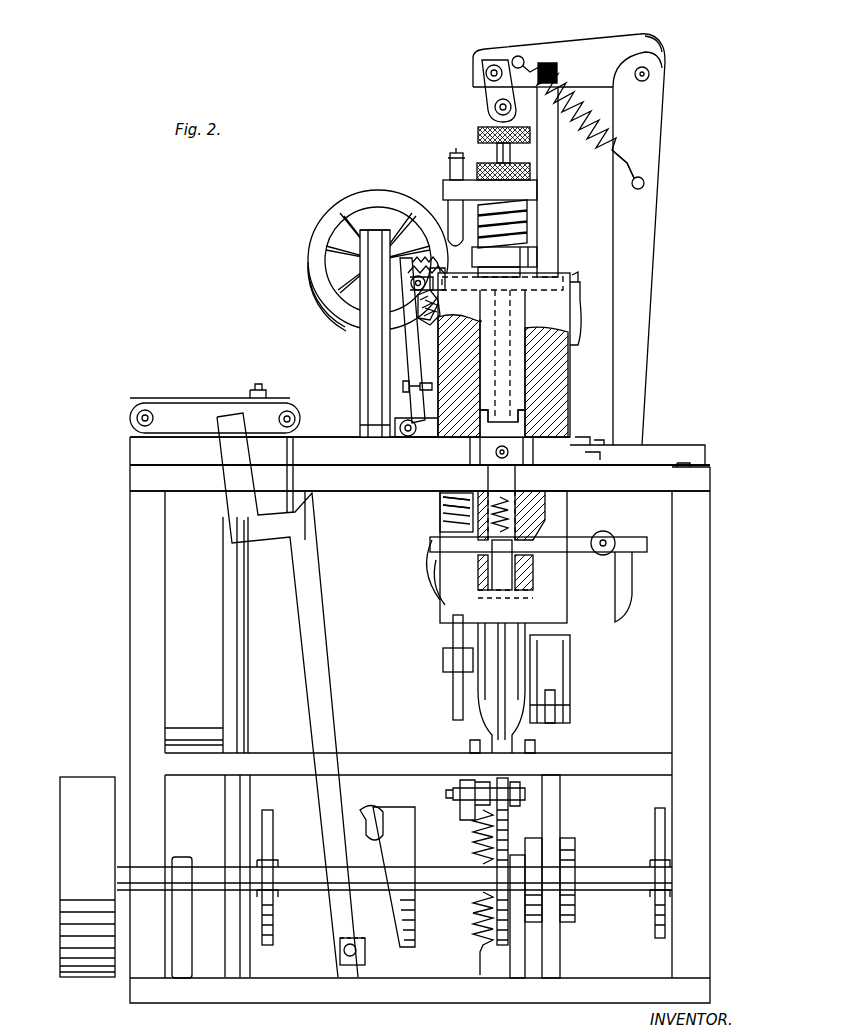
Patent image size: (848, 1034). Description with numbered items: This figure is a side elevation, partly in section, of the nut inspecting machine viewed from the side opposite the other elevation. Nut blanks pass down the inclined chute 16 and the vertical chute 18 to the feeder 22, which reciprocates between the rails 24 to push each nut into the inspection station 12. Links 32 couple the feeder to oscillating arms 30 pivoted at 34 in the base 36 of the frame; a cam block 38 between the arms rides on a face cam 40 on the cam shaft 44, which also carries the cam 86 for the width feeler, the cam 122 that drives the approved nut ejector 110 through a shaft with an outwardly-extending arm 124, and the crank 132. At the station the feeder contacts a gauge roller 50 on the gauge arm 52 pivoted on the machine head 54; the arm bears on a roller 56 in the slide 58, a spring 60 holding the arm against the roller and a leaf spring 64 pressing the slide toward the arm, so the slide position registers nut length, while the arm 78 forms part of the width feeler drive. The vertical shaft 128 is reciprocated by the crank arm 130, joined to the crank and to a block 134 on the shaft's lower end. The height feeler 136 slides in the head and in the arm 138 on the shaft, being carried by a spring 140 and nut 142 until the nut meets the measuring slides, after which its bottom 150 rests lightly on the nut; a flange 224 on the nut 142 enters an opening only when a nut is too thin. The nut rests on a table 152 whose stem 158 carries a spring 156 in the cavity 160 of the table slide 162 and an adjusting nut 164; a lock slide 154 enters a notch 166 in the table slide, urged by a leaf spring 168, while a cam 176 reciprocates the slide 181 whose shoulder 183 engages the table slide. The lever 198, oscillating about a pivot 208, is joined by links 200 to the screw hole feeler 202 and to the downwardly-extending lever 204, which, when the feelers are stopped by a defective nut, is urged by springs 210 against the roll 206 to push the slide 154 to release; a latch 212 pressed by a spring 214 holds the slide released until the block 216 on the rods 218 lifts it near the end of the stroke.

The inspection station 12 is at (510, 452).
The inclined chute 16 is at (372, 370).
The vertical chute 18 is at (364, 406).
The feeder 22 is at (322, 441).
The rails 24 is at (491, 460).
The oscillating arms 30 is at (318, 608).
The links 32 is at (190, 412).
The pivot 34 is at (340, 954).
The base 36 is at (384, 1000).
The cam block 38 is at (365, 812).
The face cam 40 is at (400, 818).
The cam shaft 44 is at (616, 890).
The gauge roller 50 is at (405, 438).
The gauge arm 52 is at (404, 345).
The machine head 54 is at (570, 408).
The roller 56 is at (427, 313).
The slide 58 is at (448, 283).
The spring 60 is at (432, 290).
The leaf spring 64 is at (580, 313).
The arm 78 is at (655, 448).
The cam 86 is at (655, 838).
The approved nut ejector 110 is at (509, 426).
The cam 122 is at (270, 844).
The outwardly-extending arm 124 is at (222, 733).
The vertical shaft 128 is at (549, 240).
The crank arm 130 is at (556, 812).
The crank 132 is at (576, 843).
The block 134 is at (560, 688).
The height feeler 136 is at (490, 328).
The outwardly-projecting arm 138 is at (448, 203).
The spring 140 is at (528, 224).
The nut 142 is at (532, 258).
The bottom of the slide 150 is at (484, 424).
The table 152 is at (506, 478).
The lock slide 154 is at (445, 545).
The spring 156 is at (535, 512).
The stem 158 is at (530, 500).
The cavity 160 is at (540, 532).
The table slide 162 is at (535, 565).
The nut 164 is at (528, 583).
The notch 166 is at (435, 591).
The leaf spring 168 is at (432, 571).
The cam 176 is at (514, 852).
The slide 181 is at (500, 646).
The shoulder 183 is at (480, 716).
The lever 198 is at (590, 48).
The links 200 is at (490, 97).
The nut screw hole feeler 202 is at (497, 152).
The downwardly-extending lever 204 is at (645, 237).
The roll 206 is at (612, 532).
The pivot 208 is at (545, 70).
The springs 210 is at (638, 160).
The latch 212 is at (456, 521).
The spring 214 is at (465, 501).
The block 216 is at (445, 661).
The rods 218 is at (450, 160).
The flange 224 is at (480, 248).